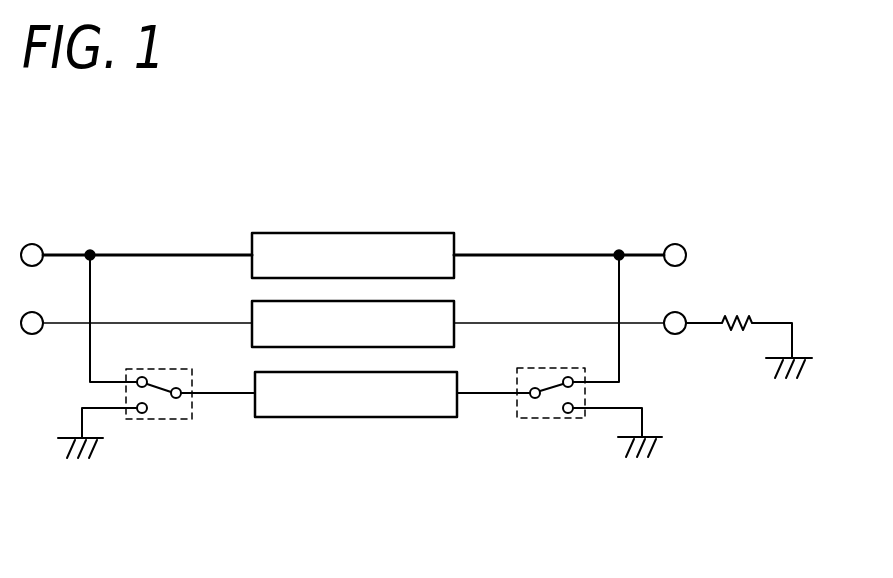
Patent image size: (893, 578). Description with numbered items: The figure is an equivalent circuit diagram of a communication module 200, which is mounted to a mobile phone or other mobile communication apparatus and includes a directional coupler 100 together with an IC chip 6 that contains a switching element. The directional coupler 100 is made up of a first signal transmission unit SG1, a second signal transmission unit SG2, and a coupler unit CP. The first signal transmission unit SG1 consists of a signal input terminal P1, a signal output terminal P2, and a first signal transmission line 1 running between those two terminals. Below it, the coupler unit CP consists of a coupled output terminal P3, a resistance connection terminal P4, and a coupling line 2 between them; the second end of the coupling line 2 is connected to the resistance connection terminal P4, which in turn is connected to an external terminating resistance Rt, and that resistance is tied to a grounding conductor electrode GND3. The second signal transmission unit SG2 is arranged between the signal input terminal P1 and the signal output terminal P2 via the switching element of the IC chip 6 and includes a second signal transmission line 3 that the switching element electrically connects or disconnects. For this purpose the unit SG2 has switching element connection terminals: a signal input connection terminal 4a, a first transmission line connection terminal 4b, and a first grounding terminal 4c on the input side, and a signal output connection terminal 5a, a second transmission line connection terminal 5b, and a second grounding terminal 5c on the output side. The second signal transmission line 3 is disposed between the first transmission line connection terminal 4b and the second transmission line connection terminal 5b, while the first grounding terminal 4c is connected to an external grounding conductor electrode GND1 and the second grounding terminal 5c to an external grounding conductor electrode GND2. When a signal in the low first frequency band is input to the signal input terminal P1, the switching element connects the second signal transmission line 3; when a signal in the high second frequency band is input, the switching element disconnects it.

The first signal transmission line 1 is at (291, 243).
The coupling line 2 is at (446, 310).
The second signal transmission line 3 is at (379, 410).
The signal input connection terminal 4a is at (139, 377).
The first transmission line connection terminal 4b is at (179, 388).
The first grounding terminal 4c is at (142, 414).
The signal output connection terminal 5a is at (570, 376).
The second transmission line connection terminal 5b is at (530, 389).
The second grounding terminal 5c is at (568, 414).
The IC chip 6 is at (182, 410).
The directional coupler 100 is at (529, 178).
The communication module 200 is at (661, 128).
The signal input terminal P1 is at (32, 251).
The signal output terminal P2 is at (678, 251).
The coupled output terminal P3 is at (32, 334).
The resistance connection terminal P4 is at (676, 334).
The coupler unit CP is at (221, 303).
The first signal transmission unit SG1 is at (398, 200).
The second signal transmission unit SG2 is at (318, 438).
The external grounding conductor electrode GND1 is at (66, 433).
The external grounding conductor electrode GND2 is at (655, 434).
The grounding conductor electrode GND3 is at (768, 351).
The external terminating resistance Rt is at (738, 318).